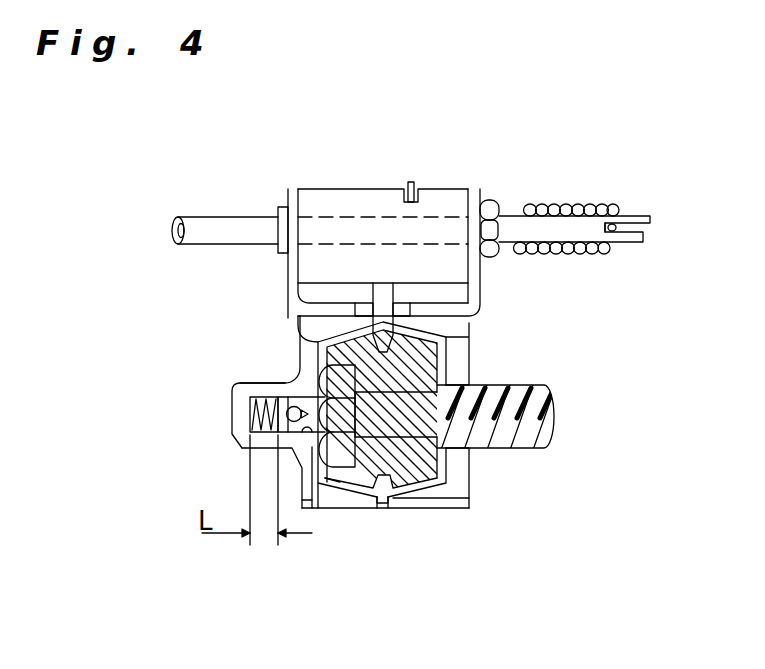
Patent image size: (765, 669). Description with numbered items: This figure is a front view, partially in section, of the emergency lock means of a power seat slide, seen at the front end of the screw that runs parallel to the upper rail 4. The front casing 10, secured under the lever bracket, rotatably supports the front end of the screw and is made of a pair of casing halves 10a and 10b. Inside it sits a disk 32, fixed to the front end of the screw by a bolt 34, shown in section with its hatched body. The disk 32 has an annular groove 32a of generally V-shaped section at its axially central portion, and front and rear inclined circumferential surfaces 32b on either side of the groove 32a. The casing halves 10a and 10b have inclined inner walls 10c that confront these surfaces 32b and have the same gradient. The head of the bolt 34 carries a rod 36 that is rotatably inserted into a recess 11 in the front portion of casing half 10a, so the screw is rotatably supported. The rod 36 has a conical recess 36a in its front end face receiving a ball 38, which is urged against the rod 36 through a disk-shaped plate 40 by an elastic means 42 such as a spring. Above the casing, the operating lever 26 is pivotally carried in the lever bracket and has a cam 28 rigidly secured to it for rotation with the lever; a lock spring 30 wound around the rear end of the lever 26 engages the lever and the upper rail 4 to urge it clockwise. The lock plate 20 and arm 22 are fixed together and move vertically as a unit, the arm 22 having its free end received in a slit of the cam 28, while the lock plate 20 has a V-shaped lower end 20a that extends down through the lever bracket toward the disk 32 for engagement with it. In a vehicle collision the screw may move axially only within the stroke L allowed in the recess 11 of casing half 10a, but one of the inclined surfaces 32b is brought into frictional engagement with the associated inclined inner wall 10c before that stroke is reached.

The upper rail 4 is at (522, 447).
The front casing 10 is at (465, 580).
The casing half 10a is at (350, 500).
The casing half 10b is at (427, 508).
The inclined inner walls 10c is at (376, 490).
The recess 11 is at (314, 500).
The lock plate 20 is at (378, 291).
The lower end 20a is at (448, 332).
The arm 22 is at (410, 183).
The operating lever 26 is at (200, 240).
The cam 28 is at (434, 198).
The lock spring 30 is at (612, 204).
The disk 32 is at (420, 367).
The annular groove 32a is at (462, 497).
The inclined circumferential surfaces 32b is at (422, 484).
The bolt 34 is at (312, 372).
The rod 36 is at (295, 373).
The conical recess 36a is at (238, 382).
The ball 38 is at (250, 400).
The disk-shaped plate 40 is at (250, 427).
The elastic means 42 is at (250, 419).